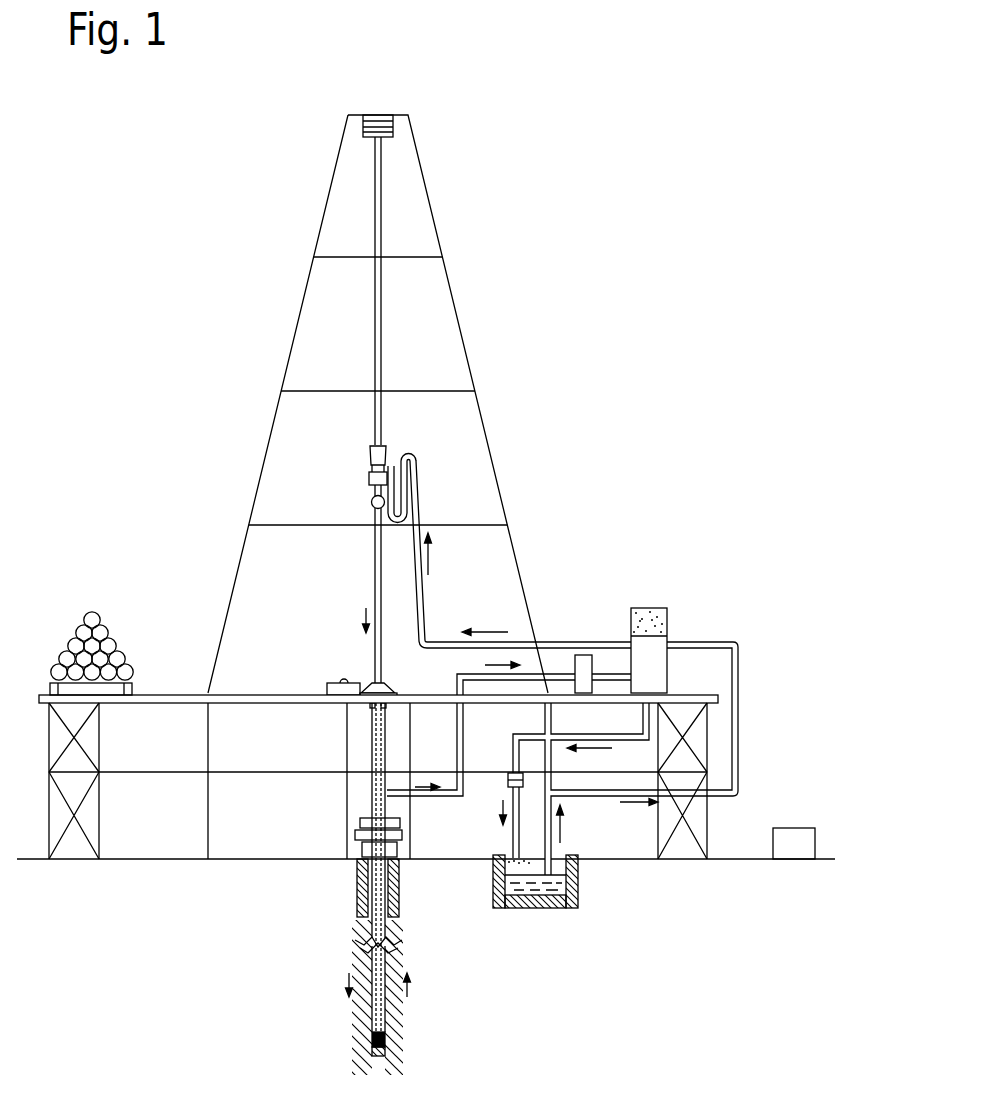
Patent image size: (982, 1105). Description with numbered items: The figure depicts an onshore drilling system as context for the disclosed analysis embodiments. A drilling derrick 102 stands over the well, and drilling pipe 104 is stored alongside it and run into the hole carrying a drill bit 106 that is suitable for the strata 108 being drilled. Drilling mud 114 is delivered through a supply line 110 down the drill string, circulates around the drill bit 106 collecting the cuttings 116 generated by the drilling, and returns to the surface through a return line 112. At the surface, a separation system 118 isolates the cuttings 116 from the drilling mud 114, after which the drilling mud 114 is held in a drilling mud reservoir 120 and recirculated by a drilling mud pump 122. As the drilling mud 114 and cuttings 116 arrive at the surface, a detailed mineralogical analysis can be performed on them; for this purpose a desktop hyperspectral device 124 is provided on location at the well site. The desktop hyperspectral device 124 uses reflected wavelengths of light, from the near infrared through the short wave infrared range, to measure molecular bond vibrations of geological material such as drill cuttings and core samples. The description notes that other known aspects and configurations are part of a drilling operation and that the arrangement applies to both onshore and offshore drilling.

The drilling derrick 102 is at (425, 180).
The drilling pipe 104 is at (86, 608).
The drill bit 106 is at (387, 1038).
The strata 108 is at (390, 1050).
The supply line 110 is at (737, 643).
The return line 112 is at (457, 677).
The drilling mud 114 is at (543, 887).
The cuttings 116 is at (512, 856).
The separation system 118 is at (523, 867).
The drilling mud reservoir 120 is at (536, 908).
The drilling mud pump 122 is at (667, 674).
The desktop hyperspectral device 124 is at (792, 828).